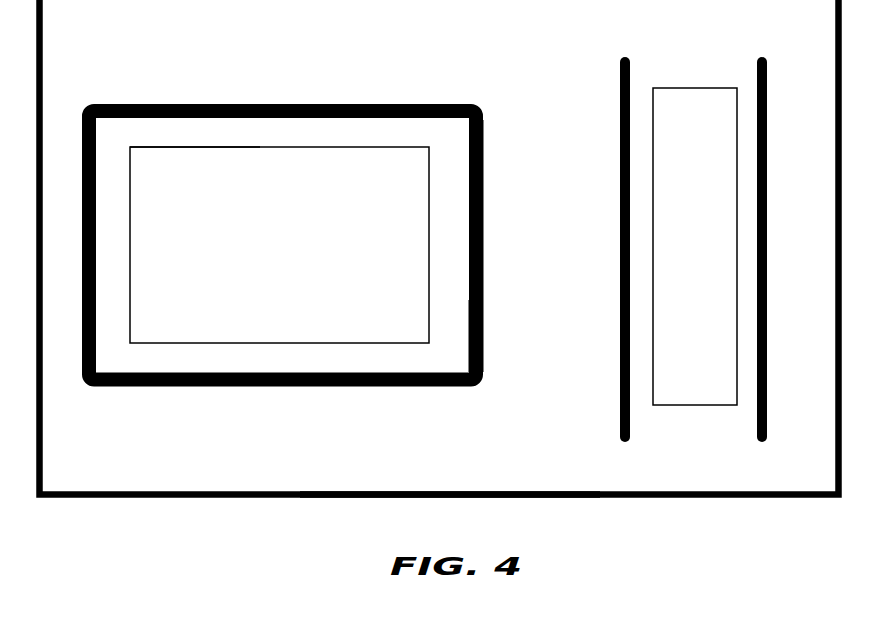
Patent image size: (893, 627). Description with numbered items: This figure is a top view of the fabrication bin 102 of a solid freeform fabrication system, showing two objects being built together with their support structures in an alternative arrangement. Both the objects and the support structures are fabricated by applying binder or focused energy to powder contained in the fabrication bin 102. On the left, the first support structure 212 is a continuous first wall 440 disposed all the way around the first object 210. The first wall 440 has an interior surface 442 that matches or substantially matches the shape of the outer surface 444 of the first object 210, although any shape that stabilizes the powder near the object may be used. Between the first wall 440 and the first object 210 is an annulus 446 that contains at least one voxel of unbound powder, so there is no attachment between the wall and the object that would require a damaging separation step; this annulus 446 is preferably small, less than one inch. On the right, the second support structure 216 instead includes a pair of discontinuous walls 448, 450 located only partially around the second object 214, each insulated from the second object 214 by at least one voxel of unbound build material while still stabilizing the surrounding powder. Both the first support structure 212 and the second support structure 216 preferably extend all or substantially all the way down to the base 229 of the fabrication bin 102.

The fabrication bin 102 is at (460, 62).
The first object 210 is at (300, 258).
The first support structure 212 is at (242, 84).
The second object 214 is at (717, 256).
The second support structure 216 is at (573, 80).
The base 229 is at (430, 491).
The first wall 440 is at (483, 263).
The interior surface 442 is at (464, 339).
The outer surface 444 is at (221, 140).
The annulus 446 is at (483, 205).
The first discontinuous wall 448 is at (620, 213).
The second discontinuous wall 450 is at (785, 210).